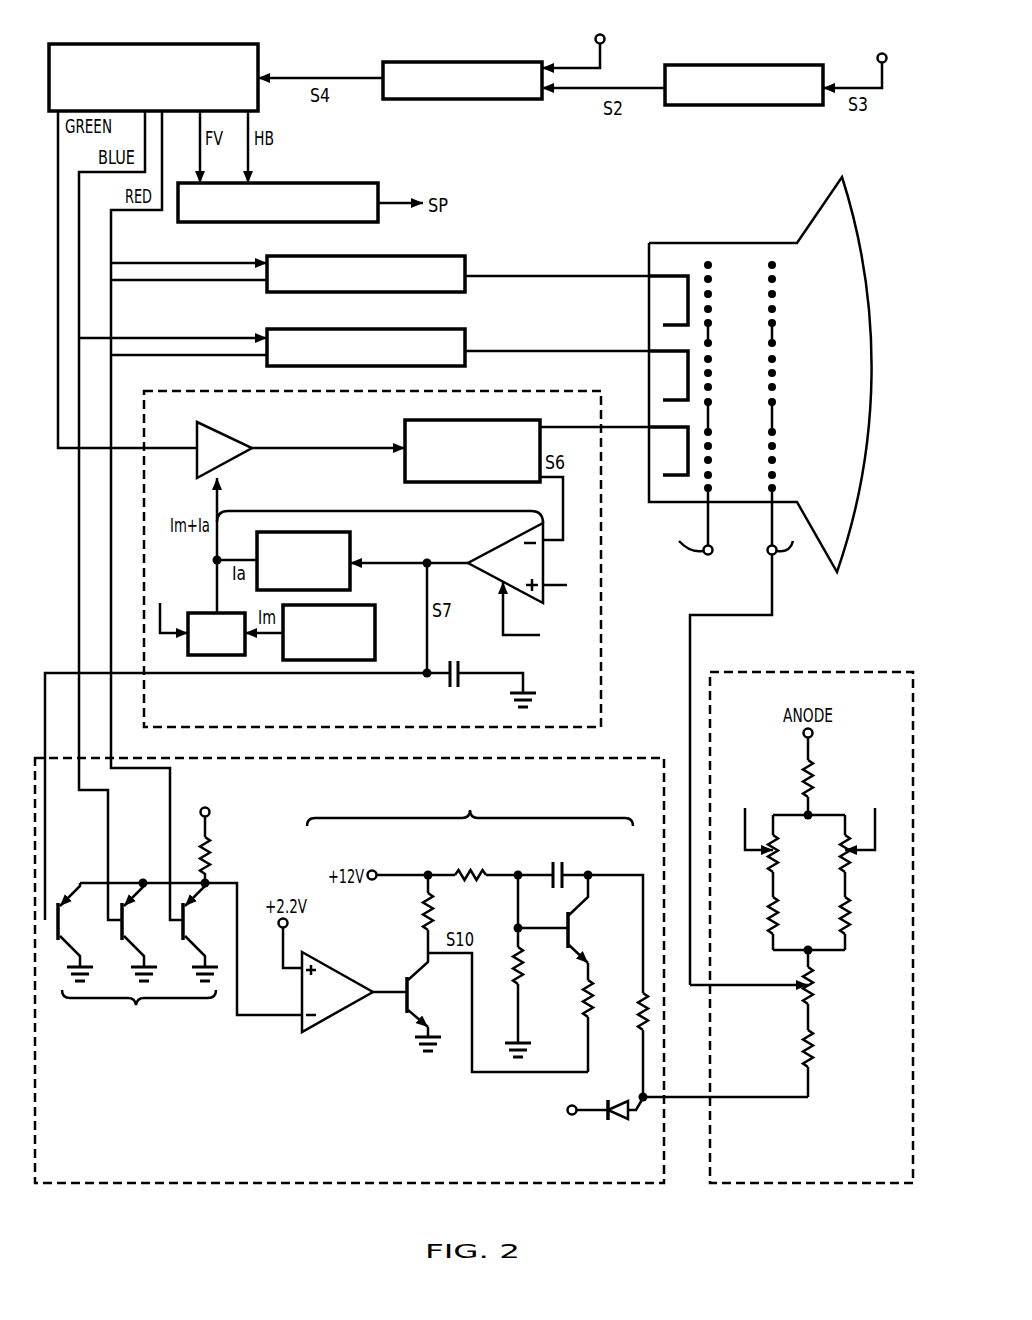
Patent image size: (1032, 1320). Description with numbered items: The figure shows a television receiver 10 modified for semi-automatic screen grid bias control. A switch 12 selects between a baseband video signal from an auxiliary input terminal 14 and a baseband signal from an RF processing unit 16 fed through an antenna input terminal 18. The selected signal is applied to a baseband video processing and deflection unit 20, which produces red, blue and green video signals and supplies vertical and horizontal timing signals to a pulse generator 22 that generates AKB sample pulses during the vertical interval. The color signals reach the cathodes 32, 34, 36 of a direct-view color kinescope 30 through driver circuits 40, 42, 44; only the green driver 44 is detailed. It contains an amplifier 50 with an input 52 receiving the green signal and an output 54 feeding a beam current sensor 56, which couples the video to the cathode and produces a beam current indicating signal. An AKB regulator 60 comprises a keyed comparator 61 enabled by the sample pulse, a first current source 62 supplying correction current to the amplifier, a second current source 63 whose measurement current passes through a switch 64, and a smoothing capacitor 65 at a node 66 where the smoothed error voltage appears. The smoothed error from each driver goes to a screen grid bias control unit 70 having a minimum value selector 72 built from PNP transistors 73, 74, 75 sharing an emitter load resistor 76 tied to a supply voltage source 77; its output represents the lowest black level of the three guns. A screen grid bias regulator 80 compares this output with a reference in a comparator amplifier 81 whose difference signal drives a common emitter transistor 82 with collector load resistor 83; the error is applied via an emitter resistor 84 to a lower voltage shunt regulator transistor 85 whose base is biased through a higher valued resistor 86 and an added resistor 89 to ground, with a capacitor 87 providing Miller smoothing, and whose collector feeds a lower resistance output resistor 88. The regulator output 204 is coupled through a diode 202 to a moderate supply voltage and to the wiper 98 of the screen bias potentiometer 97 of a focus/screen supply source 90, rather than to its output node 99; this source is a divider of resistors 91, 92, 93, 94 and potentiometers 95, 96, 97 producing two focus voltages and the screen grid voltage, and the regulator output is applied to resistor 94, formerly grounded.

The television receiver 10 is at (332, 52).
The switch 12 is at (440, 62).
The auxiliary input terminal 14 is at (596, 38).
The RF processing unit 16 is at (752, 65).
The antenna input terminal 18 is at (879, 54).
The baseband video processing and deflection unit 20 is at (127, 44).
The pulse generator 22 is at (315, 183).
The kinescope 30 is at (818, 217).
The cathode 32 is at (633, 274).
The cathode 34 is at (633, 348).
The cathode 36 is at (632, 424).
The red driver circuit 40 is at (292, 256).
The blue driver circuit 42 is at (292, 329).
The green driver circuit 44 is at (262, 391).
The amplifier 50 is at (222, 436).
The input 52 is at (191, 448).
The output 54 is at (251, 455).
The beam current sensor 56 is at (403, 422).
The AKB regulator circuit 60 is at (403, 511).
The keyed comparator 61 is at (517, 577).
The current source 62 is at (350, 545).
The current source 63 is at (372, 608).
The switch 64 is at (190, 656).
The capacitor 65 is at (455, 690).
The node Va 66 is at (424, 670).
The screen grid bias control unit 70 is at (433, 1176).
The minimum value selector circuit 72 is at (176, 958).
The PNP transistor 73 is at (88, 932).
The PNP transistor 74 is at (153, 932).
The PNP transistor 75 is at (213, 932).
The emitter load resistor 76 is at (212, 852).
The source of supply voltage 77 is at (205, 807).
The screen grid bias regulator circuit 80 is at (470, 803).
The comparator amplifier 81 is at (328, 1018).
The transistor 82 is at (438, 1005).
The collector load resistor 83 is at (425, 930).
The emitter resistor 84 is at (583, 1000).
The transistor 85 is at (602, 940).
The resistor 86 is at (473, 882).
The capacitor 87 is at (558, 890).
The output resistor 88 is at (641, 1002).
The resistor 89 is at (514, 962).
The focus/screen supply source 90 is at (901, 1177).
The resistor 91 is at (812, 766).
The resistor 92 is at (765, 924).
The resistor 93 is at (850, 930).
The resistor 94 is at (800, 1058).
The potentiometer 95 is at (769, 866).
The potentiometer 96 is at (850, 862).
The screen bias potentiometer 97 is at (810, 996).
The wiper 98 is at (794, 991).
The output 99 is at (814, 955).
The diode 202 is at (615, 1122).
The output 204 is at (639, 1096).